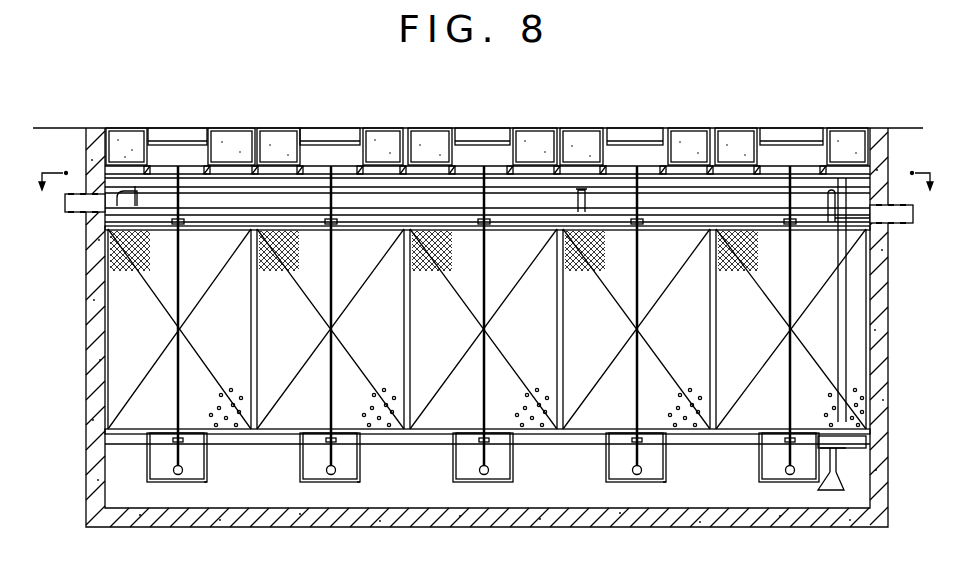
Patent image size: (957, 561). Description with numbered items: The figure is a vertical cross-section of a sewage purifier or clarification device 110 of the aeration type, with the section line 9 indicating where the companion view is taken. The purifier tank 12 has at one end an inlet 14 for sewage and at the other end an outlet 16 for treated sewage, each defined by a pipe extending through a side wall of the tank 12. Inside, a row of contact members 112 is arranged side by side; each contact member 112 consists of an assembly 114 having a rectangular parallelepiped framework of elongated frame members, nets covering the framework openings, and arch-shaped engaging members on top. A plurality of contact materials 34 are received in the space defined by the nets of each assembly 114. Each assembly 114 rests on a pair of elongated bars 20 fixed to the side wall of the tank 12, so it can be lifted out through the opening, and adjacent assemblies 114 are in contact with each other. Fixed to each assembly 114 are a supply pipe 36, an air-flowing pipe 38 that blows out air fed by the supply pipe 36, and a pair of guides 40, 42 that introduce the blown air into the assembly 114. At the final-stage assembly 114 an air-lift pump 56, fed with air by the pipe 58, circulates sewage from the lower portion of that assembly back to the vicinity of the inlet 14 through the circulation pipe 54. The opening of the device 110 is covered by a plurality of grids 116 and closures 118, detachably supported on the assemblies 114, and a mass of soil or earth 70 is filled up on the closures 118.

The sewage purifier or clarification device 110 is at (777, 111).
The purifier tank 12 is at (86, 326).
The inlet 14 is at (72, 213).
The outlet 16 is at (900, 226).
The elongated bars 20 is at (524, 446).
The contact materials 34 is at (190, 420).
The supply pipe 36 is at (789, 330).
The air-flowing pipe 38 is at (177, 478).
The guide 40 is at (146, 476).
The guide 42 is at (210, 481).
The circulation pipe 54 is at (540, 190).
The air-lift pump 56 is at (845, 468).
The pipe for supplying air to the air-lift pump 58 is at (848, 304).
The mass of soil or earth 70 is at (592, 140).
The contact member 112 is at (124, 436).
The assembly 114 is at (105, 405).
The grids 116 is at (167, 163).
The closures 118 is at (195, 133).
The section line 9- 9 is at (490, 193).